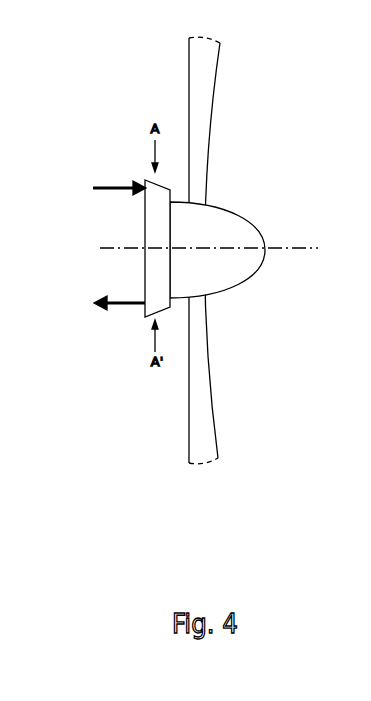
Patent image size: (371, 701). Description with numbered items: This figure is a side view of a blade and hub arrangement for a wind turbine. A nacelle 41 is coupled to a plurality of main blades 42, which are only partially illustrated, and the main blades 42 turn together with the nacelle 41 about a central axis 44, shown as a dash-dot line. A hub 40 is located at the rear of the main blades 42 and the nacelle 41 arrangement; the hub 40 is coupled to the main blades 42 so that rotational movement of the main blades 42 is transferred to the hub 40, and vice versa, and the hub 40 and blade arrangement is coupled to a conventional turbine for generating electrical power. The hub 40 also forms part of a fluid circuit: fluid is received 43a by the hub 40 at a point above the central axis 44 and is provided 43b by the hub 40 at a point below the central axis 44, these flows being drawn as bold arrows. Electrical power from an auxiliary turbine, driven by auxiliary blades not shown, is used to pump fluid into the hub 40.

The hub 40 is at (145, 213).
The nacelle 41 is at (220, 215).
The main blades 42 is at (203, 365).
The fluid receiving 43a is at (113, 187).
The fluid providing 43b is at (121, 306).
The central axis 44 is at (290, 247).